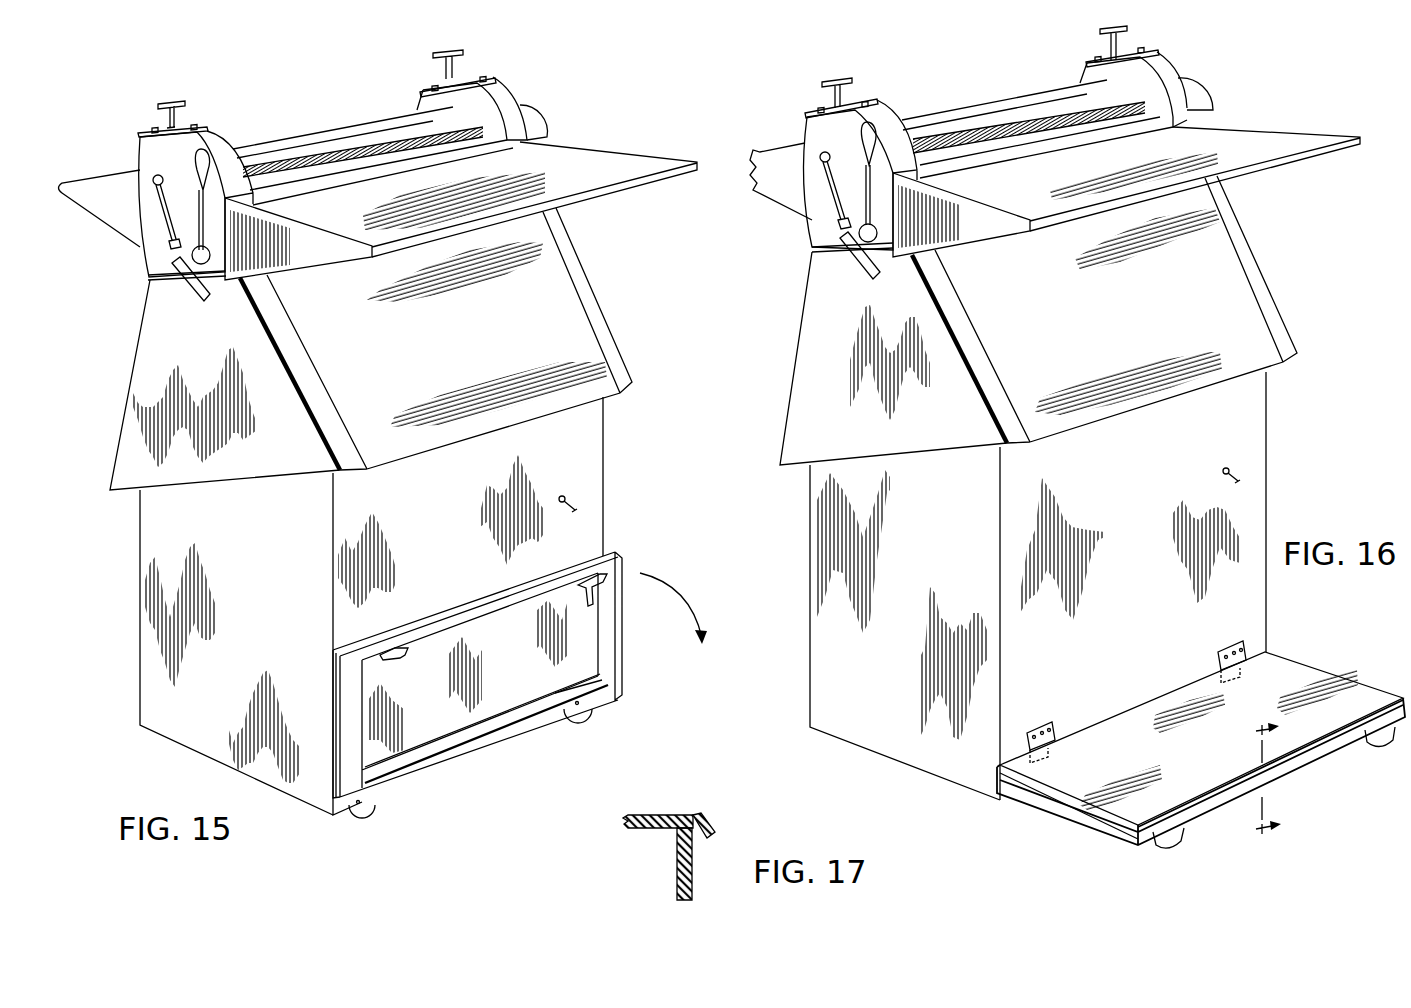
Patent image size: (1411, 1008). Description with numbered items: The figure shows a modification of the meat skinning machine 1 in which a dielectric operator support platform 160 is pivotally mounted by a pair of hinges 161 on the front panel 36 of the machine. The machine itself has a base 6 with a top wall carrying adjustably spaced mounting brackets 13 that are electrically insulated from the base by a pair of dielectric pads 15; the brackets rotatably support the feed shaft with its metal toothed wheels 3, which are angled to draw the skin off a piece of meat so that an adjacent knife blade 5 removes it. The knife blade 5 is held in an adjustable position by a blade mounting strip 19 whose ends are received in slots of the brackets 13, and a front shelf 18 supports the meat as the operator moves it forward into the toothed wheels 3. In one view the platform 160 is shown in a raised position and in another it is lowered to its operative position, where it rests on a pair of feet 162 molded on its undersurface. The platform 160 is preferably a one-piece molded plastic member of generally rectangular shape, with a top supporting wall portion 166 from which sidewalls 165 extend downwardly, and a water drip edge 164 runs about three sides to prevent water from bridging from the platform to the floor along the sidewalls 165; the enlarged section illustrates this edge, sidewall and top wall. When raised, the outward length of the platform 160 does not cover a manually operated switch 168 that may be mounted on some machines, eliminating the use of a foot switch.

In FIG. 15, the meat skinning machine 1 is at (582, 112).
In FIG. 16, the meat skinning machine 1 is at (1276, 258).
In FIG. 15, the metal toothed wheels 3 is at (362, 150).
In FIG. 16, the metal toothed wheels 3 is at (1047, 137).
In FIG. 15, the knife blade 5 is at (408, 127).
In FIG. 16, the knife blade 5 is at (998, 118).
In FIG. 15, the base 6 is at (185, 738).
In FIG. 16, the base 6 is at (877, 701).
In FIG. 15, the mounting brackets 13 is at (150, 157).
In FIG. 16, the mounting brackets 13 is at (810, 190).
In FIG. 15, the dielectric pads 15 is at (155, 275).
In FIG. 15, the front shelf 18 is at (590, 168).
In FIG. 16, the front shelf 18 is at (1273, 142).
In FIG. 15, the blade mounting strip 19 is at (268, 147).
In FIG. 16, the blade mounting strip 19 is at (923, 123).
In FIG. 15, the front panel 36 is at (450, 504).
In FIG. 16, the front panel 36 is at (1125, 464).
In FIG. 15, the dielectric operator support platform 160 is at (494, 680).
In FIG. 16, the dielectric operator support platform 160 is at (1204, 751).
In FIG. 17, the dielectric operator support platform 160 is at (683, 844).
In FIG. 16, the hinges 161 is at (1042, 723).
In FIG. 15, the feet 162 is at (592, 600).
In FIG. 16, the feet 162 is at (1385, 741).
In FIG. 15, the water drip edge 164 is at (330, 697).
In FIG. 16, the water drip edge 164 is at (1078, 802).
In FIG. 17, the water drip edge 164 is at (706, 824).
In FIG. 15, the sidewalls 165 is at (477, 607).
In FIG. 16, the sidewalls 165 is at (1328, 750).
In FIG. 17, the sidewalls 165 is at (693, 888).
In FIG. 15, the top supporting wall portion 166 is at (533, 657).
In FIG. 16, the top supporting wall portion 166 is at (1127, 737).
In FIG. 17, the top supporting wall portion 166 is at (662, 813).
In FIG. 15, the manually operated switch 168 is at (580, 500).
In FIG. 16, the manually operated switch 168 is at (1240, 468).